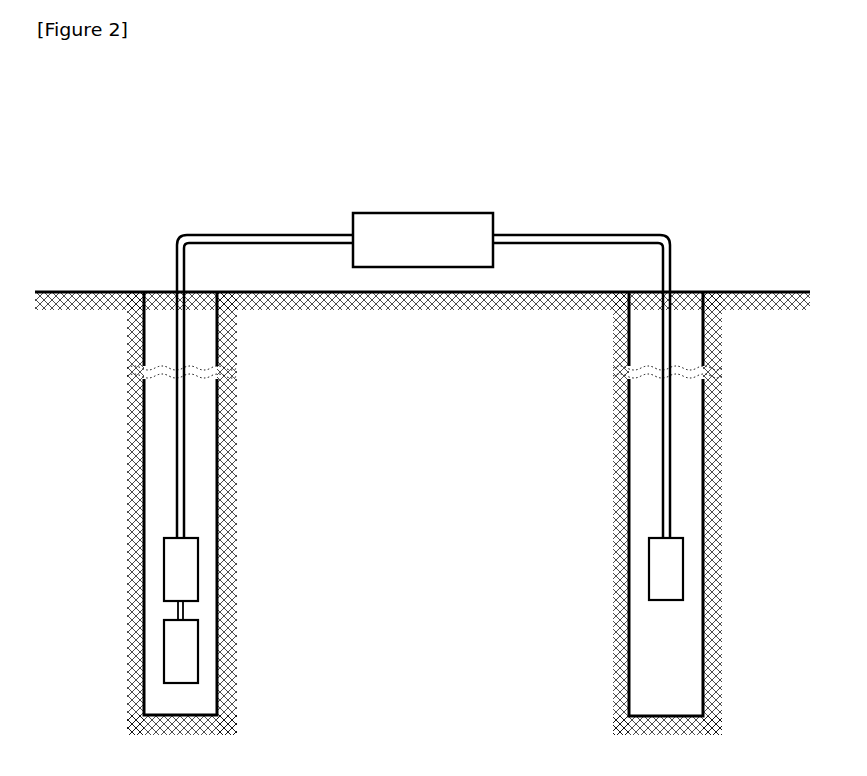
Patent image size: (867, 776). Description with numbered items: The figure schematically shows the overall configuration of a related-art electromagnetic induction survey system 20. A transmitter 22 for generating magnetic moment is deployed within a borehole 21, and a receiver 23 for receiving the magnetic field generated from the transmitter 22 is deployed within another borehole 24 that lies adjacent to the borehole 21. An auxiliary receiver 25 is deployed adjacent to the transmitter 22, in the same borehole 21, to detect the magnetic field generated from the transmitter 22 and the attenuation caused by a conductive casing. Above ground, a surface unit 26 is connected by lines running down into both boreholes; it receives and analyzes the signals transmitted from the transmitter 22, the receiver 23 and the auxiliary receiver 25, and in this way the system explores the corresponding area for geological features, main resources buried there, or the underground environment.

The electromagnetic induction survey system 20 is at (422, 401).
The borehole 21 is at (210, 425).
The transmitter 22 is at (200, 569).
The receiver 23 is at (648, 570).
The another borehole 24 is at (636, 426).
The auxiliary receiver 25 is at (200, 651).
The surface unit 26 is at (421, 225).